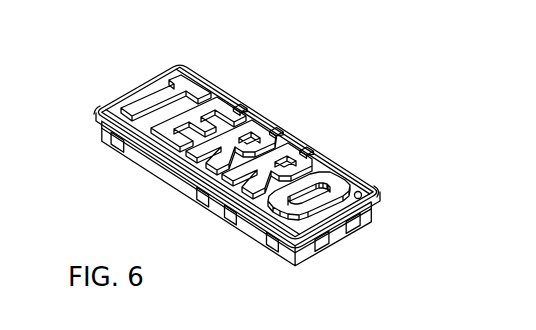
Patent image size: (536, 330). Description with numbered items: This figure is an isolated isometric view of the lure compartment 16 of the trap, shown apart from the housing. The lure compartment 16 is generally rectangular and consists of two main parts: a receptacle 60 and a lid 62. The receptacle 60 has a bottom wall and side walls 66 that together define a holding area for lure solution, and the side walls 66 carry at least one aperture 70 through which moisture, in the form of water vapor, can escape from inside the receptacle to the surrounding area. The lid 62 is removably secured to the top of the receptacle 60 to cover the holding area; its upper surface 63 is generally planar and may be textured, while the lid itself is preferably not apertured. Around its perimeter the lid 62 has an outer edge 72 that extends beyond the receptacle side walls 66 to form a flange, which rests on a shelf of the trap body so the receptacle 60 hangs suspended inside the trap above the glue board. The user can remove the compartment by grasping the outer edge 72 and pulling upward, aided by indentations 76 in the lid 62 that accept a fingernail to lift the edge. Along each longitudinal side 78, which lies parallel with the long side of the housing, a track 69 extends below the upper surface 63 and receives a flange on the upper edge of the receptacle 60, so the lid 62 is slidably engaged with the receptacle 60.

The lure compartment 16 is at (347, 83).
The receptacle 60 is at (372, 226).
The lid 62 is at (363, 173).
The upper surface 63 is at (229, 108).
The side walls 66 is at (258, 232).
The track 69 is at (212, 204).
The aperture 70 is at (122, 148).
The outer edge 72 is at (95, 106).
The indentations 76 is at (308, 150).
The longitudinal side 78 is at (244, 105).